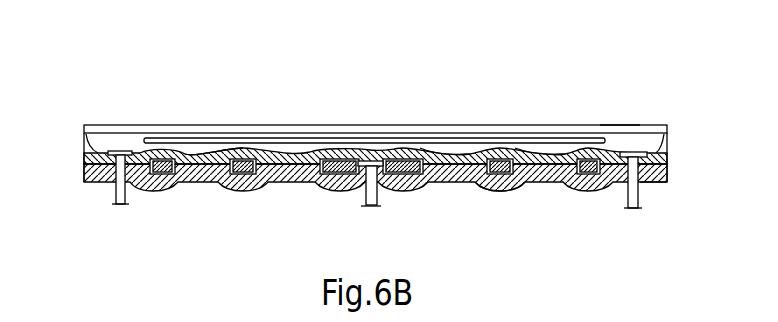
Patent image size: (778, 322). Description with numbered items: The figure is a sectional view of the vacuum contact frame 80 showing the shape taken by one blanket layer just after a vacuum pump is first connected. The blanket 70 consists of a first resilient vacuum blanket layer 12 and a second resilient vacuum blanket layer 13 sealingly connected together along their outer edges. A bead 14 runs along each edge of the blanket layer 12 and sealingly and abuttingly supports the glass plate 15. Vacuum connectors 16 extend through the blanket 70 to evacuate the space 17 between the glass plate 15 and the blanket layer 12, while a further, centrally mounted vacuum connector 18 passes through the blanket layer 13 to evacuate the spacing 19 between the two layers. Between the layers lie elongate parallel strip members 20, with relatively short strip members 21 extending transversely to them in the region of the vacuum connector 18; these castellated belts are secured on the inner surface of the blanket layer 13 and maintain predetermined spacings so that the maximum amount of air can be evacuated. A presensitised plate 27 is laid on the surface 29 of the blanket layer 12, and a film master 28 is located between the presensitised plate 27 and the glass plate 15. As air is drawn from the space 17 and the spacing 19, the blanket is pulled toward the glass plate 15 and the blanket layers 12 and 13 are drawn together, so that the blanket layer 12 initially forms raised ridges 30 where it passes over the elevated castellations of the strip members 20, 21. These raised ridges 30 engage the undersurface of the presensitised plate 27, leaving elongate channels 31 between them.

The first resilient vacuum blanket layer 12 is at (547, 150).
The second resilient vacuum blanket layer 13 is at (563, 178).
The bead 14 is at (86, 124).
The glass plate 15 is at (443, 152).
The vacuum connector 16 is at (116, 197).
The space 17 is at (111, 142).
The vacuum connector 18 is at (378, 208).
The spacing 19 is at (236, 160).
The elongate parallel strip member 20 is at (234, 172).
The short strip member 21 is at (371, 148).
The presensitised plate 27 is at (187, 170).
The film master 28 is at (267, 138).
The surface 29 is at (528, 150).
The raised ridge 30 is at (153, 145).
The elongate channel 31 is at (200, 148).
The blanket 70 is at (675, 186).
The vacuum contact frame 80 is at (622, 123).